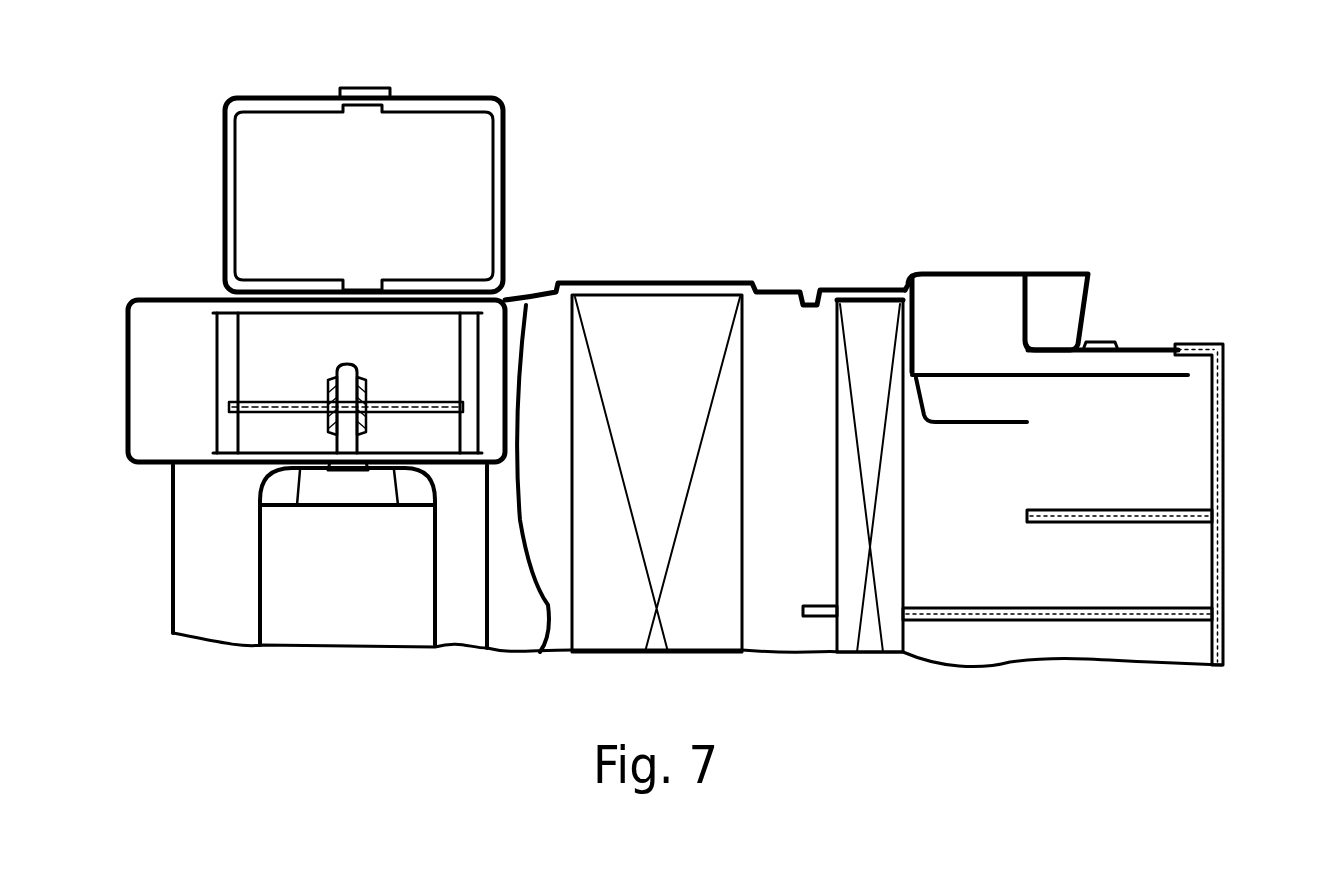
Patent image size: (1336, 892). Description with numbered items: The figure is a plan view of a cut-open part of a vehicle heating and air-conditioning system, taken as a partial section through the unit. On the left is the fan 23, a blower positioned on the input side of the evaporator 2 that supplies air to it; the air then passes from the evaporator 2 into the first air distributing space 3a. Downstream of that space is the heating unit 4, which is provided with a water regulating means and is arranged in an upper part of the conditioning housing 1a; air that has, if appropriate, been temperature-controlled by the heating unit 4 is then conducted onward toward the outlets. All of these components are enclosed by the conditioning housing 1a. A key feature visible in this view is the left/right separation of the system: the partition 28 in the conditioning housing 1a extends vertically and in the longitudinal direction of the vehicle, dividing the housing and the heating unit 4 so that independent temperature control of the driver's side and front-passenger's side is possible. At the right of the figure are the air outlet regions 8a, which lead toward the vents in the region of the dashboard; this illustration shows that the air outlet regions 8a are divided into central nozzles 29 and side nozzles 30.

The conditioning housing 1a is at (790, 232).
The fan 23 is at (143, 461).
The evaporator 2 is at (667, 380).
The first air distributing space 3a is at (806, 497).
The heating unit 4 is at (863, 443).
The partition 28 is at (838, 608).
The air outlet regions 8a is at (1257, 477).
The side nozzles 30 is at (1195, 430).
The central nozzles 29 is at (1197, 567).